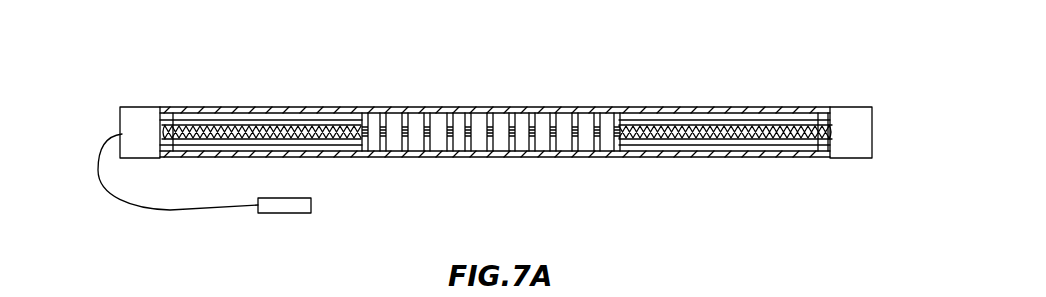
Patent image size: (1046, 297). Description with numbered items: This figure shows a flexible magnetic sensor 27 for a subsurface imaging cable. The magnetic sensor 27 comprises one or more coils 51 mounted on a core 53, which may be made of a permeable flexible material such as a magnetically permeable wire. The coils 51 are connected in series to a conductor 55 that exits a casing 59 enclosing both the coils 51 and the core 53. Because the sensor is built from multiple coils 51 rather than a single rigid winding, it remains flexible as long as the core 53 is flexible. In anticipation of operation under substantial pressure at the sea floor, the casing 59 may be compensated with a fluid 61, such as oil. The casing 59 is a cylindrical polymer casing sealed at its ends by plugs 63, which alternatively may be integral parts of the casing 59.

The magnetic sensor 27 is at (155, 79).
The coils 51 is at (520, 145).
The core 53 is at (748, 140).
The conductor 55 is at (178, 215).
The casing 59 is at (268, 108).
The fluid 61 is at (692, 118).
The plugs 63 is at (118, 114).